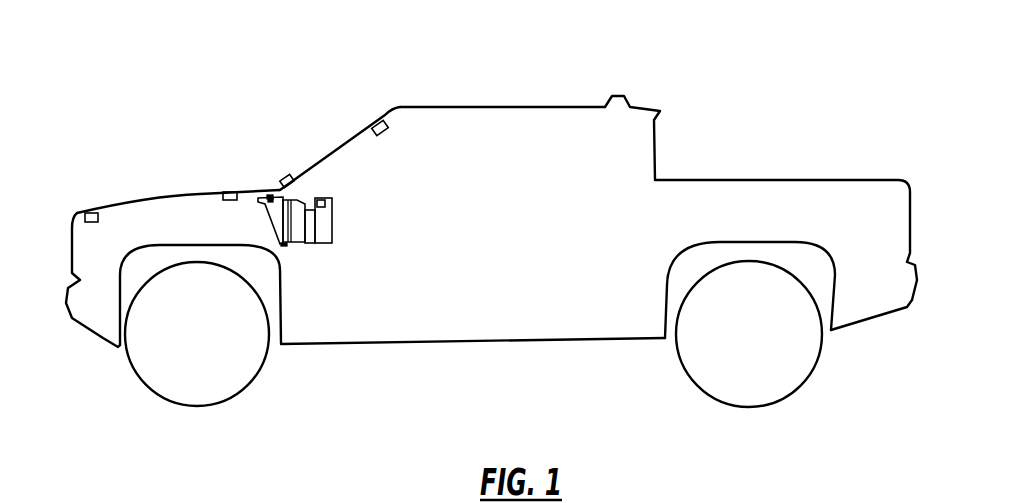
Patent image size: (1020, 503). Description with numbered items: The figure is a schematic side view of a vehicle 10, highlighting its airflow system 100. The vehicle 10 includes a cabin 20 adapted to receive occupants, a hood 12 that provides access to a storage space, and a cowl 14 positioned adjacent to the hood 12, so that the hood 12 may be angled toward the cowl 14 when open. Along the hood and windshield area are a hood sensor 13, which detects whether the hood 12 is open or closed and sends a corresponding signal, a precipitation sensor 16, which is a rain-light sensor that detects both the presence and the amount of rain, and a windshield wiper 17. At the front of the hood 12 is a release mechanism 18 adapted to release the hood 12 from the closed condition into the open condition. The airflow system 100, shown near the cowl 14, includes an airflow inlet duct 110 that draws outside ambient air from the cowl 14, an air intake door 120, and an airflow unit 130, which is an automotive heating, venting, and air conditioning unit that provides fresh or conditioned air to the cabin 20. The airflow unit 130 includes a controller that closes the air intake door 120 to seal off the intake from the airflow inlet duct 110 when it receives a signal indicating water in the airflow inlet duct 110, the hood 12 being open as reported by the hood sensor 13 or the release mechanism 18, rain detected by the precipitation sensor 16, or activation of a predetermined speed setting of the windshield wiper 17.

The vehicle 10 is at (553, 63).
The hood 12 is at (163, 197).
The hood sensor 13 is at (230, 192).
The cowl 14 is at (267, 195).
The precipitation sensor 16 is at (377, 122).
The windshield wiper 17 is at (287, 178).
The release mechanism 18 is at (90, 213).
The cabin 20 is at (487, 133).
The airflow system 100 is at (331, 230).
The airflow inlet duct 110 is at (278, 225).
The air intake door 120 is at (307, 245).
The airflow unit 130 is at (325, 245).